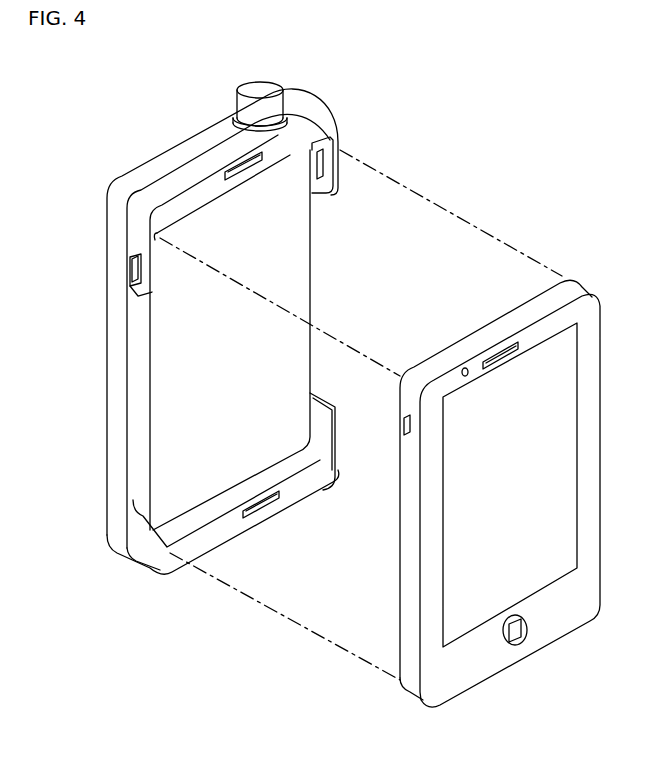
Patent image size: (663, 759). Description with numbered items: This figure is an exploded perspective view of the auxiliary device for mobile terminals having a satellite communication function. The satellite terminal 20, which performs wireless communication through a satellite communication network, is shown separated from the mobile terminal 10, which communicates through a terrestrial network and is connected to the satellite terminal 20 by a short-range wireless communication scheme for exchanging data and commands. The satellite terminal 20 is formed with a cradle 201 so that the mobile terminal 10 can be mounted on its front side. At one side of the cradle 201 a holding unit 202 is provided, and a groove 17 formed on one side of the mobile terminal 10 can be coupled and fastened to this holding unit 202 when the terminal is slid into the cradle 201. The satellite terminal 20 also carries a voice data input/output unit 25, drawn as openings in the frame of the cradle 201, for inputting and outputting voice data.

The mobile terminal 10 is at (469, 443).
The groove 17 is at (400, 424).
The satellite terminal 20 is at (197, 313).
The voice data input/output unit 25 is at (243, 166).
The cradle 201 is at (307, 457).
The holding unit 202 is at (320, 176).